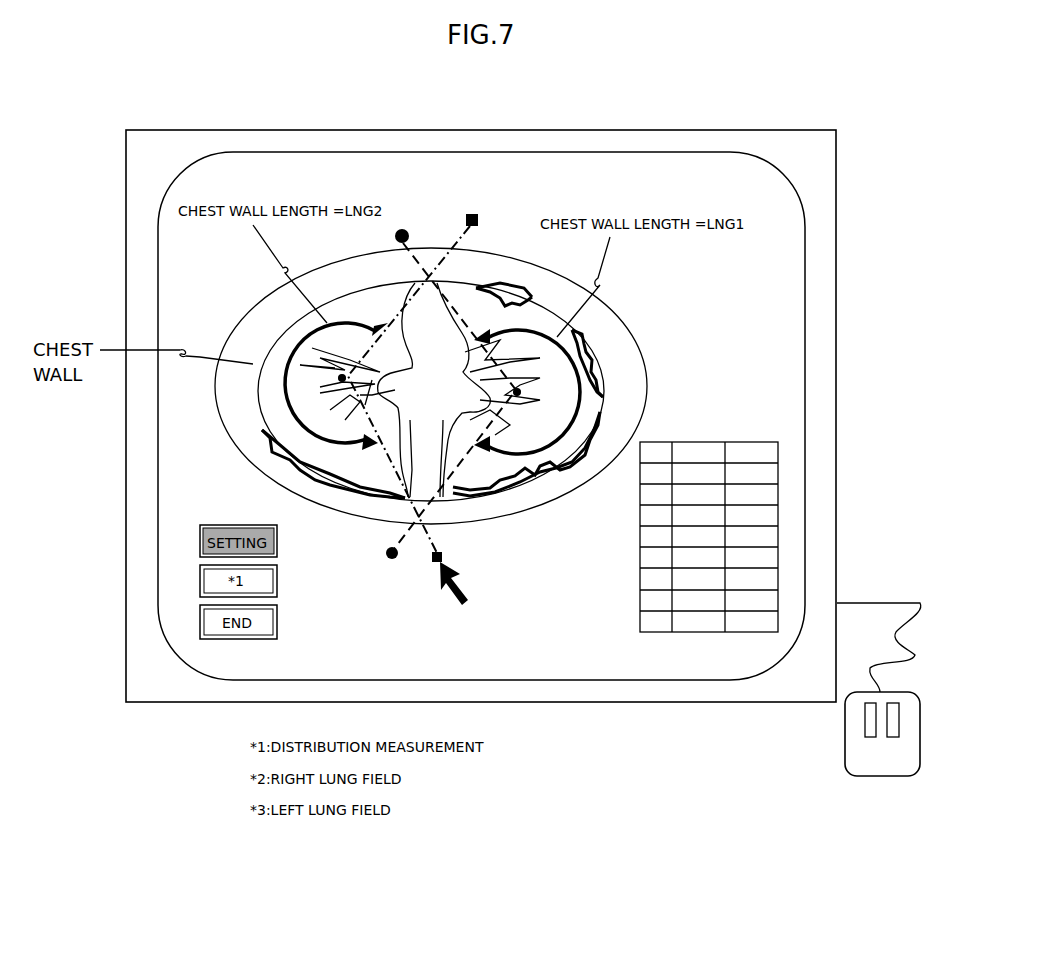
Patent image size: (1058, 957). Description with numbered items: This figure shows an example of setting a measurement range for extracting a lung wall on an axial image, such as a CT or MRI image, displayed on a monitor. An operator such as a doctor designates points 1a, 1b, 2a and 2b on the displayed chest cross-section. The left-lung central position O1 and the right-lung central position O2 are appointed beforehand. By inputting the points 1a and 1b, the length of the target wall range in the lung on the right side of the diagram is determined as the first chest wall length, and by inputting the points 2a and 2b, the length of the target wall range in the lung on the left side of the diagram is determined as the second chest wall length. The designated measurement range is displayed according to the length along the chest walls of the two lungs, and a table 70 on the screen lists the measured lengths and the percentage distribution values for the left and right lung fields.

The measurement result table 70 is at (703, 632).
The designated point 1a is at (385, 240).
The designated point 1b is at (374, 564).
The designated point 2a is at (481, 208).
The designated point 2b is at (453, 551).
The left-lung central position O1 is at (486, 392).
The right-lung central position O2 is at (392, 387).